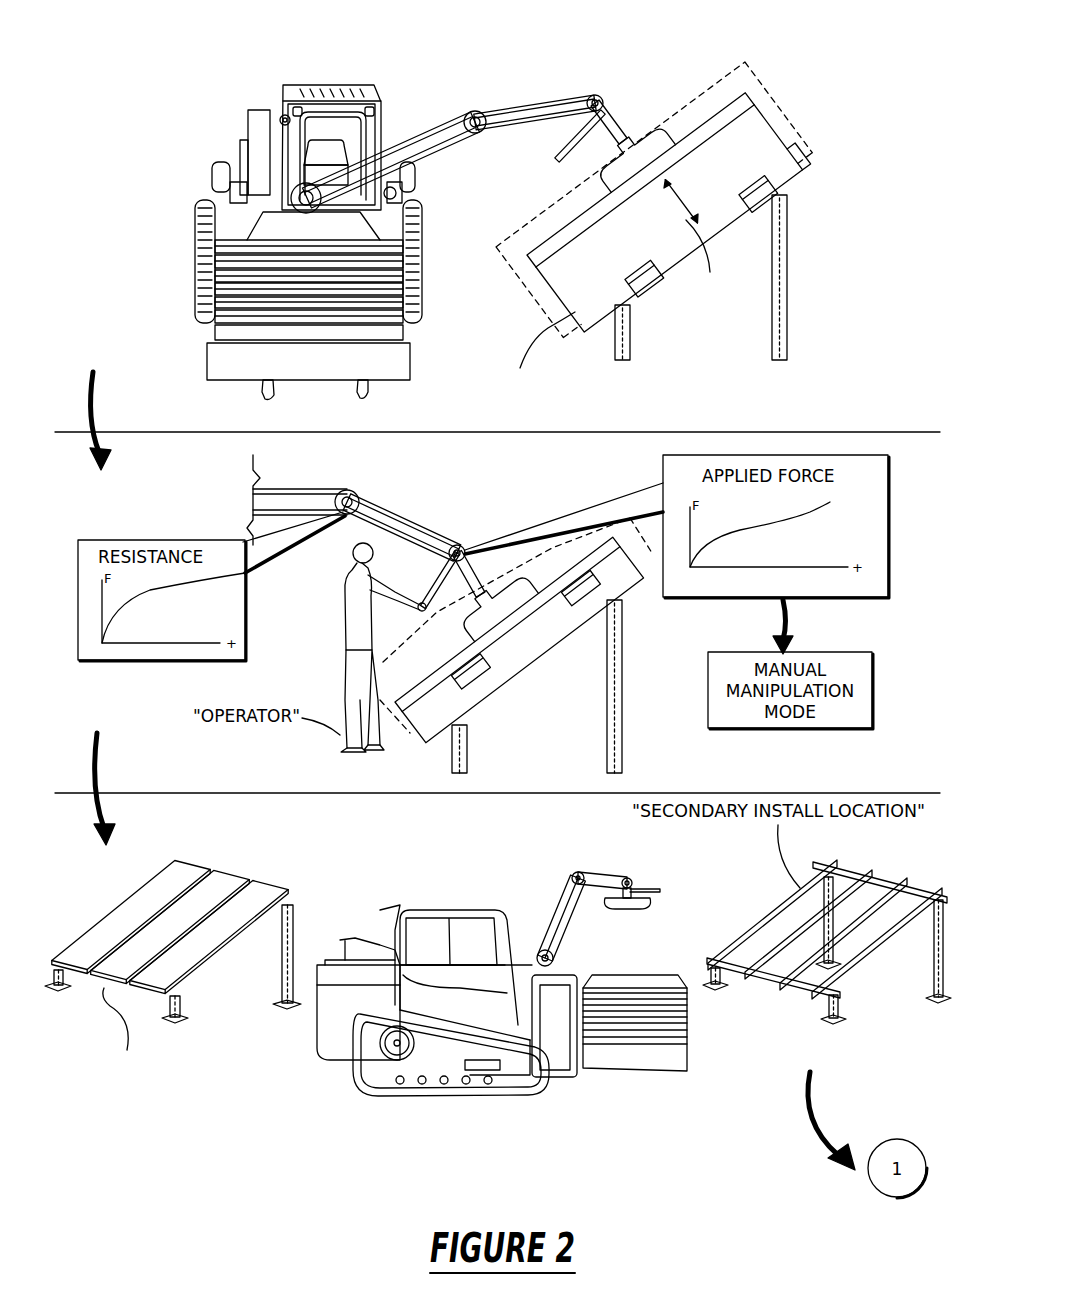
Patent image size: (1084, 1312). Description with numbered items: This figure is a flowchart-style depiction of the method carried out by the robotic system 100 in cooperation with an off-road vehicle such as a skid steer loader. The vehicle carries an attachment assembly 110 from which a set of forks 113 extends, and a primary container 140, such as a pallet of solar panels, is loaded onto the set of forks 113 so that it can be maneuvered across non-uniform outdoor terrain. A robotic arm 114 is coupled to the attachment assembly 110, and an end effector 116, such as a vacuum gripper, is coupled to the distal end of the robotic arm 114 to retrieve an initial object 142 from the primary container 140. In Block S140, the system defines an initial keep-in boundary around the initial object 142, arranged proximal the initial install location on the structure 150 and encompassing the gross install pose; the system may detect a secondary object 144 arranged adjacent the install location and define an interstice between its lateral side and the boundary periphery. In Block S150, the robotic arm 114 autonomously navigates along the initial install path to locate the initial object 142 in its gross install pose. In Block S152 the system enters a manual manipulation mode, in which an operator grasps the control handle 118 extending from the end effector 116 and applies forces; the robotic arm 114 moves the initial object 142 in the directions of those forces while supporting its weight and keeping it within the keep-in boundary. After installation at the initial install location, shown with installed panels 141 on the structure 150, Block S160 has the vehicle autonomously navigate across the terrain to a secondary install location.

The robotic system 100 is at (163, 57).
The attachment assembly 110 is at (212, 232).
The set of forks 113 is at (265, 390).
The robotic arm 114 is at (467, 112).
The end effector 116 is at (602, 97).
The control handle 118 is at (557, 160).
The primary container 140 is at (207, 356).
The installed solar panels 141 is at (270, 890).
The initial object 142 is at (527, 262).
The secondary object 144 is at (651, 975).
The structure 150 is at (772, 355).
The defining an initial keep-in boundary S140 is at (812, 153).
The navigating the robotic arm according to the initial install path S150 is at (322, 85).
The entering a manual manipulation mode S152 is at (124, 421).
The navigating to a secondary install location S160 is at (130, 789).